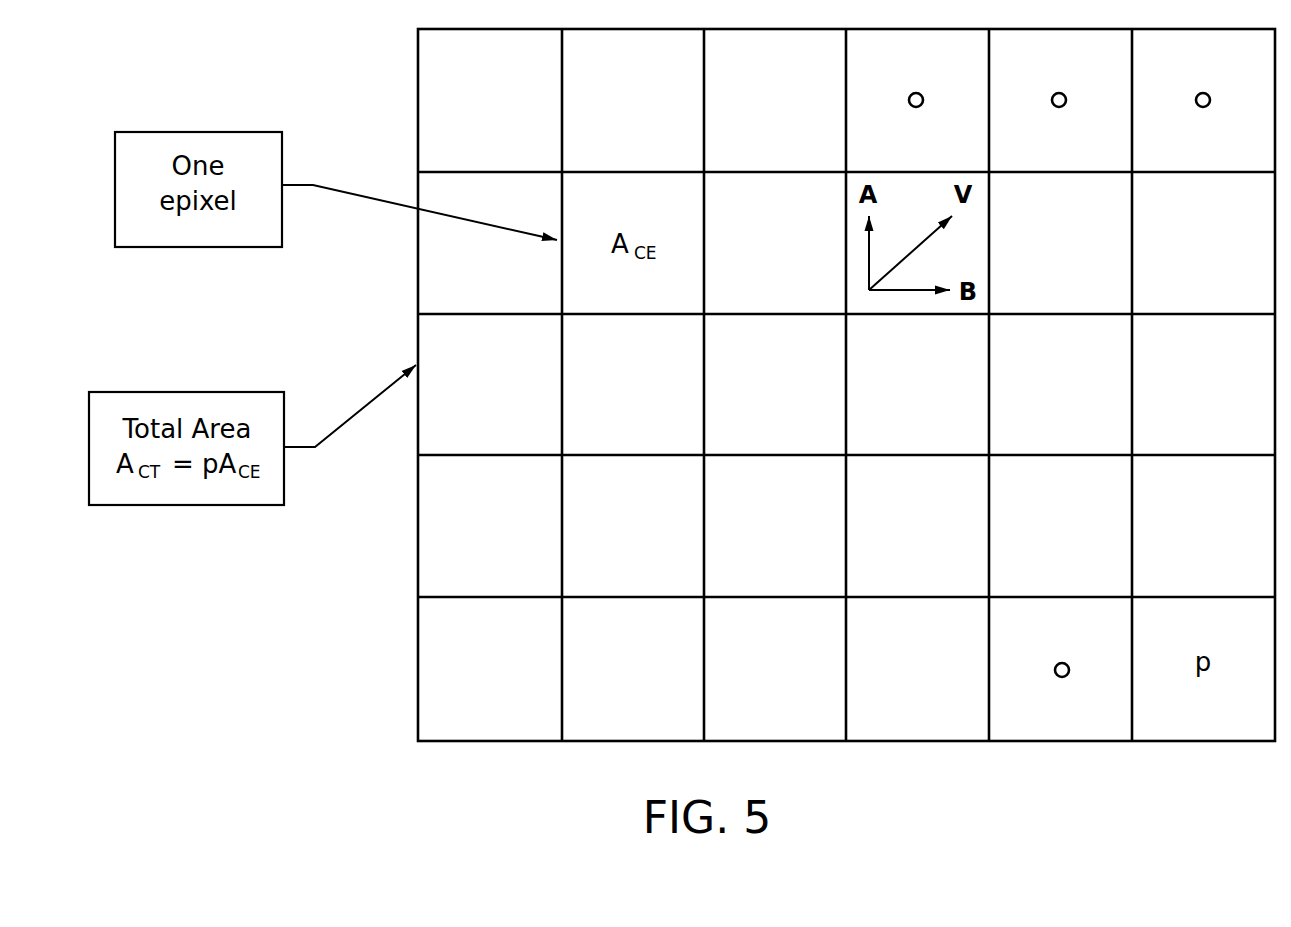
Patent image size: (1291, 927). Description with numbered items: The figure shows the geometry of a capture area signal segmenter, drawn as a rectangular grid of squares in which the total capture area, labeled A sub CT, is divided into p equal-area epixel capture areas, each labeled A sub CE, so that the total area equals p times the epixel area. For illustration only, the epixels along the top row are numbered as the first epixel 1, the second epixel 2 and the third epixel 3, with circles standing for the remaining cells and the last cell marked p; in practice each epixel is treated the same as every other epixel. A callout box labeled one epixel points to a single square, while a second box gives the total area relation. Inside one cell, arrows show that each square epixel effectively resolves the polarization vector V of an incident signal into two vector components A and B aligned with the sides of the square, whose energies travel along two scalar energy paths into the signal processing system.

The epixel 1 is at (490, 100).
The epixel 2 is at (633, 100).
The epixel 3 is at (775, 100).